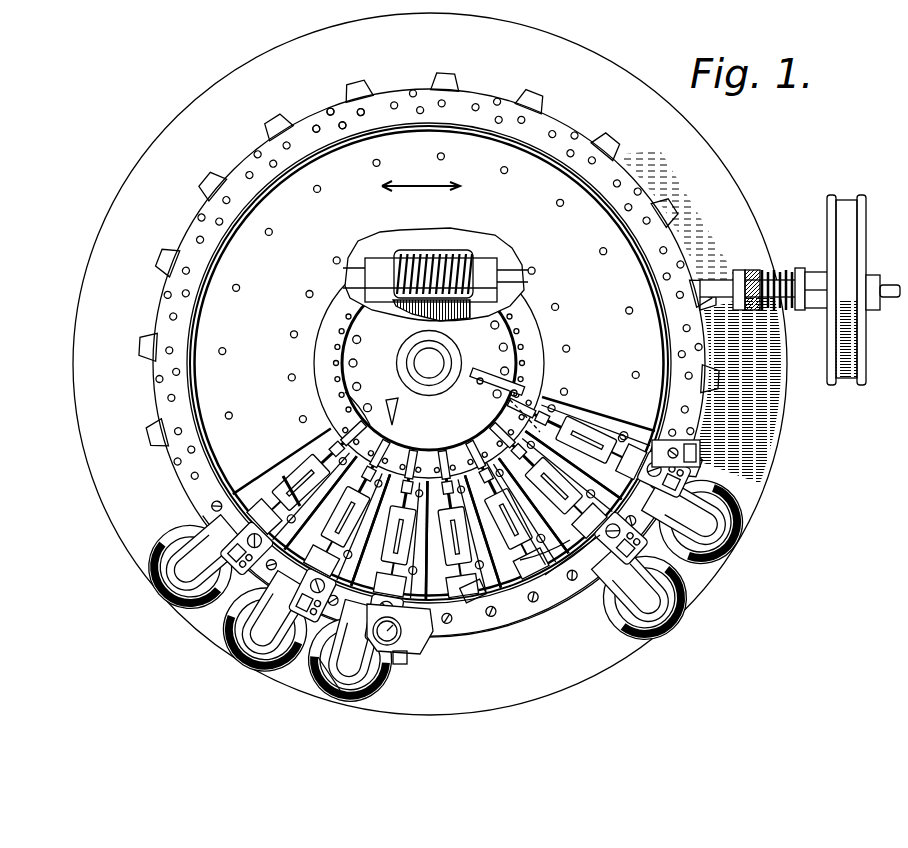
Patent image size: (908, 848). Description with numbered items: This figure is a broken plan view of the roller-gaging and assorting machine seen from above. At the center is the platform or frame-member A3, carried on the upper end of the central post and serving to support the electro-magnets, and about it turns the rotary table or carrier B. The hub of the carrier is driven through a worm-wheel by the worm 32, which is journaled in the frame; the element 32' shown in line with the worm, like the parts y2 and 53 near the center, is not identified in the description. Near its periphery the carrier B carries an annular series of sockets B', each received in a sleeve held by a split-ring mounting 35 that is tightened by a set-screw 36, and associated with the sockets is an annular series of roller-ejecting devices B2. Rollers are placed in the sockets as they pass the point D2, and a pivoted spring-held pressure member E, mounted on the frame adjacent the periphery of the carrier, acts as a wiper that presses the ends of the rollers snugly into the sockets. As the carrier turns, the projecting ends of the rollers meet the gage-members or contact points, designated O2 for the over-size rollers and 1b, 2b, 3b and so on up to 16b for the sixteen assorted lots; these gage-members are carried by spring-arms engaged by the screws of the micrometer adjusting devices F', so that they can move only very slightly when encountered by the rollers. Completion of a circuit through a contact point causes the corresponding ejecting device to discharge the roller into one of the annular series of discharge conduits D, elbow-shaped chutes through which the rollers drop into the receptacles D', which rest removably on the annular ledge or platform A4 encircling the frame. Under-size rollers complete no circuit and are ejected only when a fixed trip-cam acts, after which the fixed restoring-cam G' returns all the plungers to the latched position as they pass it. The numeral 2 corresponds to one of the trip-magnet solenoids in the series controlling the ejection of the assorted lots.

The annular ledge or platform A4 is at (90, 268).
The gage-member contact point 3b is at (212, 476).
The rotary table B is at (429, 363).
The platform or frame-member A3 is at (532, 328).
The worm 32 is at (435, 261).
The worm shaft with pulley 32' is at (800, 290).
The roller-ejecting devices B2 is at (566, 432).
The gage-member contact point 1b is at (300, 591).
The discharge conduits D is at (425, 602).
The receptacles D' is at (409, 614).
The gage-member contact point 2b is at (228, 536).
The micrometer adjusting devices F' is at (281, 635).
The gage-member contact point 16b is at (660, 463).
The pressure member E is at (471, 637).
The over-size contact point O2 is at (402, 631).
The lever y2 is at (385, 420).
The link 53 is at (348, 392).
The restoring-cam G' is at (507, 484).
The set-screw 36 is at (291, 488).
The trip-magnet solenoid 2 is at (320, 658).
The split-ring mounting 35 is at (480, 598).
The loading point D2 is at (545, 568).
The sockets B' is at (572, 555).